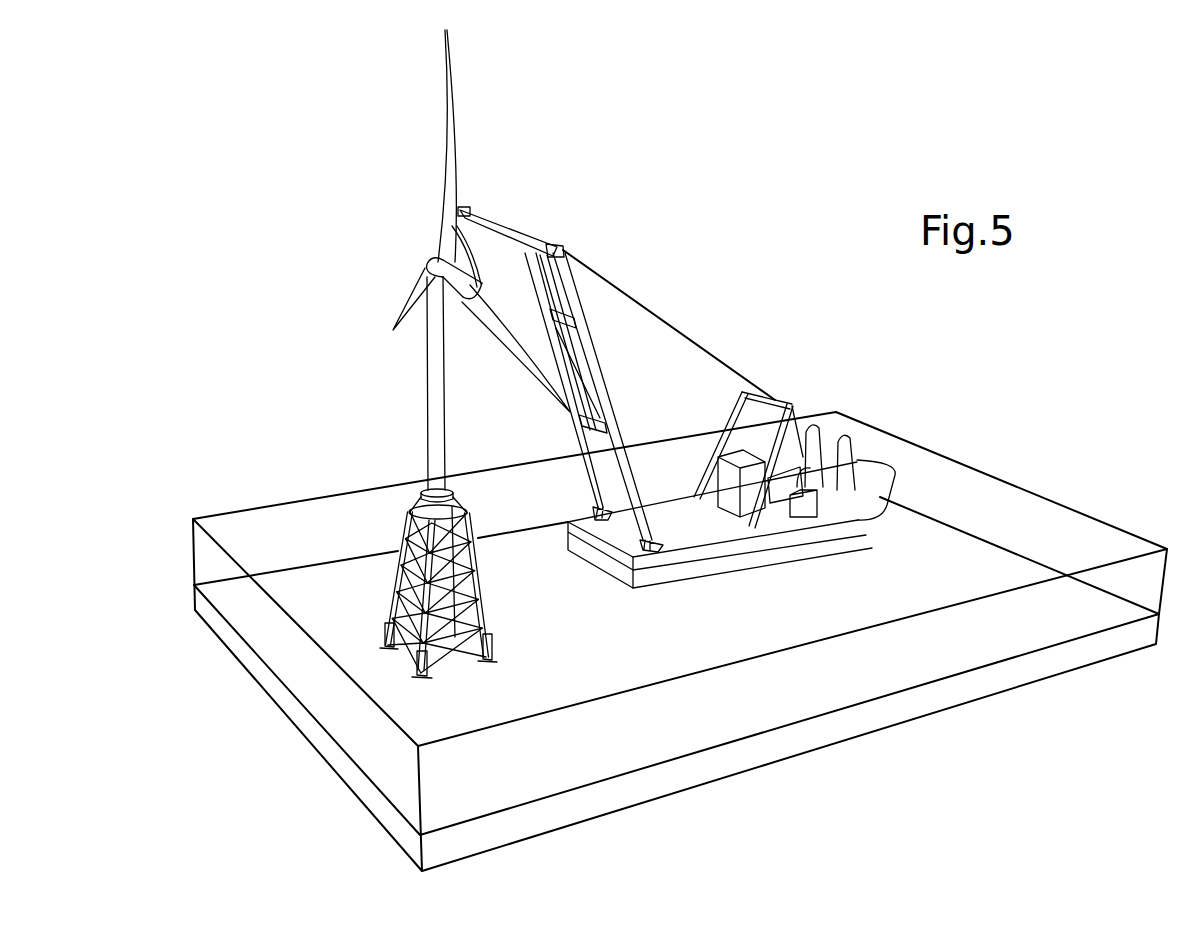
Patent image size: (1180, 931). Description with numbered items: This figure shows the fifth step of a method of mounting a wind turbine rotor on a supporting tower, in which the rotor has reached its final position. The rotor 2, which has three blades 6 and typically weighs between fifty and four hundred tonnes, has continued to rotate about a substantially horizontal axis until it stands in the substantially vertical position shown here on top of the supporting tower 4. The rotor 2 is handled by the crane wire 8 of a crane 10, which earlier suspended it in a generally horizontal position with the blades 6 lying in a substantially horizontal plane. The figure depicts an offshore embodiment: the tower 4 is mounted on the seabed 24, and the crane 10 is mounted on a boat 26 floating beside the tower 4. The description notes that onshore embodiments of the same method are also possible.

The rotor 2 is at (467, 264).
The supporting tower 4 is at (435, 383).
The blades 6 is at (449, 146).
The crane wire 8 is at (666, 320).
The crane 10 is at (512, 230).
The seabed 24 is at (312, 695).
The boat 26 is at (858, 508).